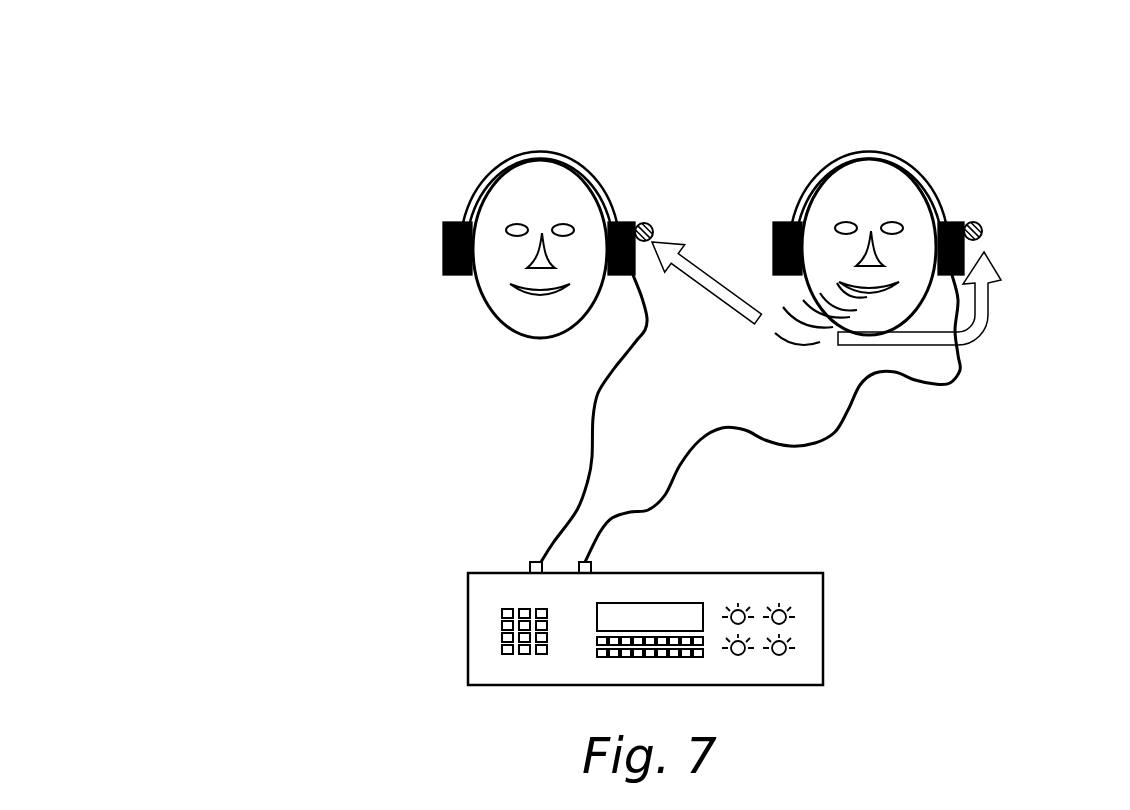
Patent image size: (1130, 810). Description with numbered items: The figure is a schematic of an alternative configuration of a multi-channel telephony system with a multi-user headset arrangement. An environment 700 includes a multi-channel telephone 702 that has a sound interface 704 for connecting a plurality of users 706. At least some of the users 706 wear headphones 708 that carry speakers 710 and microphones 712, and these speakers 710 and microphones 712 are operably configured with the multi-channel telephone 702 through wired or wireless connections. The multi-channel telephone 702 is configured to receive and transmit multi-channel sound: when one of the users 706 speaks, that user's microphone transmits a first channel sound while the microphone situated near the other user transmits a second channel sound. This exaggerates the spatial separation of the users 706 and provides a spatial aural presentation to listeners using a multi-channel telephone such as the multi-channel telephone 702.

The environment 700 is at (178, 82).
The multi-channel telephone 702 is at (468, 573).
The sound interface 704 is at (522, 534).
The users 706 is at (1008, 98).
The headphones 708 is at (503, 165).
The speakers 710 is at (452, 277).
The microphones 712 is at (643, 192).